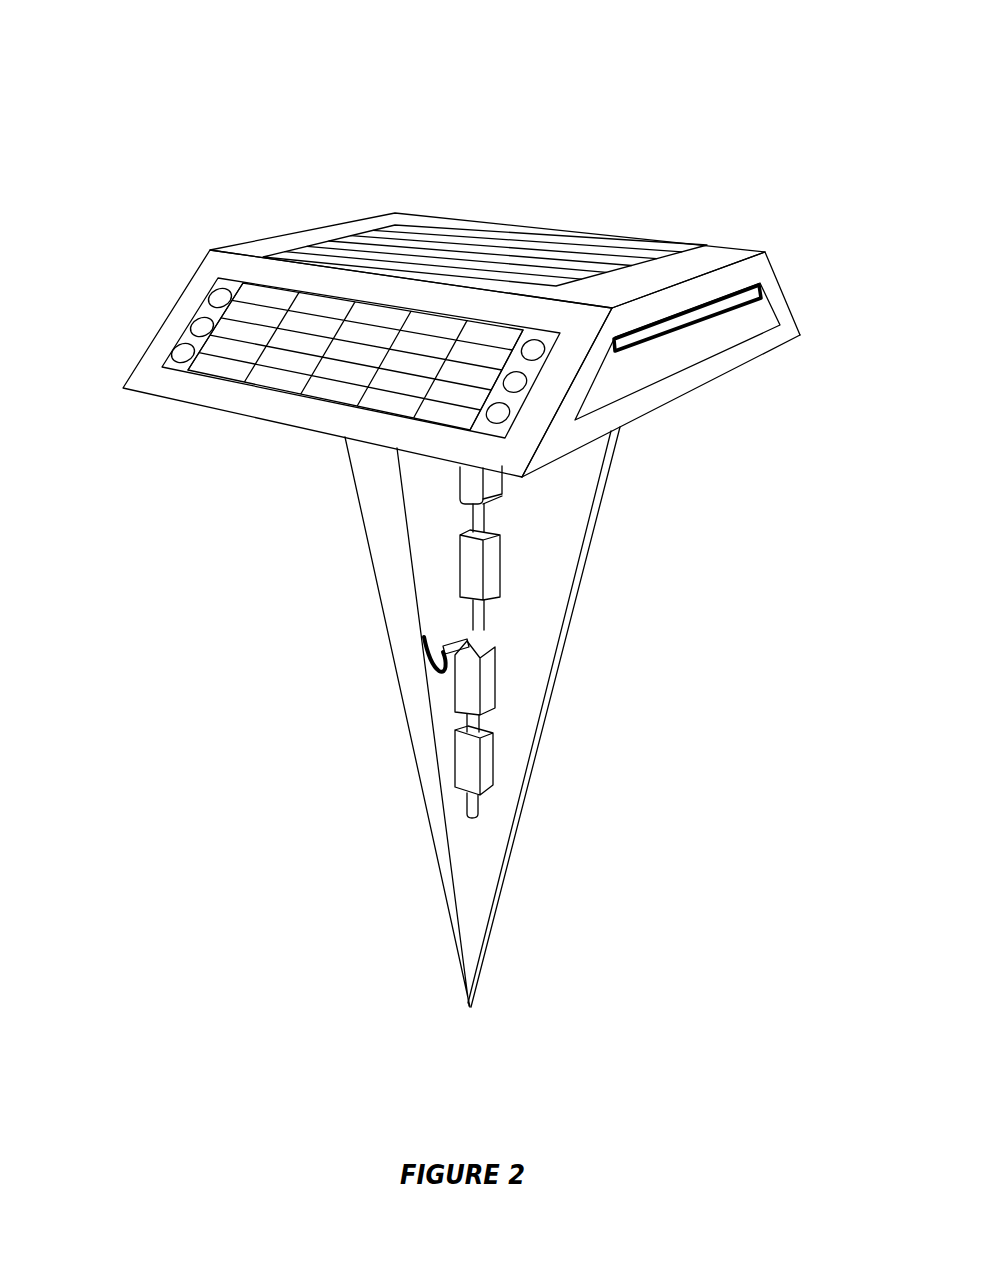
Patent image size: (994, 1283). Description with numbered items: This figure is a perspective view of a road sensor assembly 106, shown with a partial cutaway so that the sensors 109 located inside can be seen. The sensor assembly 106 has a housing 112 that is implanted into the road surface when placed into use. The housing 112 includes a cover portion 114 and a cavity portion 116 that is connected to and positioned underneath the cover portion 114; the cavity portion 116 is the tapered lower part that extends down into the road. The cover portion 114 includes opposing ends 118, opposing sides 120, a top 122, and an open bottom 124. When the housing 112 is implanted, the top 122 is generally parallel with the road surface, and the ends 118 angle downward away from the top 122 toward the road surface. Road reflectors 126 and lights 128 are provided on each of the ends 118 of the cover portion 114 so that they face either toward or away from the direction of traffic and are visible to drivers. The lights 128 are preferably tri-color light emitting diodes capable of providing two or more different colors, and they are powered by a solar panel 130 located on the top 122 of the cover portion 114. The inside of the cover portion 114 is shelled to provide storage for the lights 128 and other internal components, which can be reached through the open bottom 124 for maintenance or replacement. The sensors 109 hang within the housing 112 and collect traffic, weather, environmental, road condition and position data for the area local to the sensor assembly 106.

The sensor assembly 106 is at (462, 92).
The sensors 109 is at (475, 563).
The housing 112 is at (355, 537).
The cover portion 114 is at (395, 212).
The cavity portion 116 is at (420, 787).
The opposing ends 118 is at (778, 280).
The opposing sides 120 is at (233, 245).
The top 122 is at (713, 262).
The open bottom 124 is at (664, 406).
The road reflectors 126 is at (288, 378).
The lights 128 is at (182, 350).
The solar panel 130 is at (507, 247).